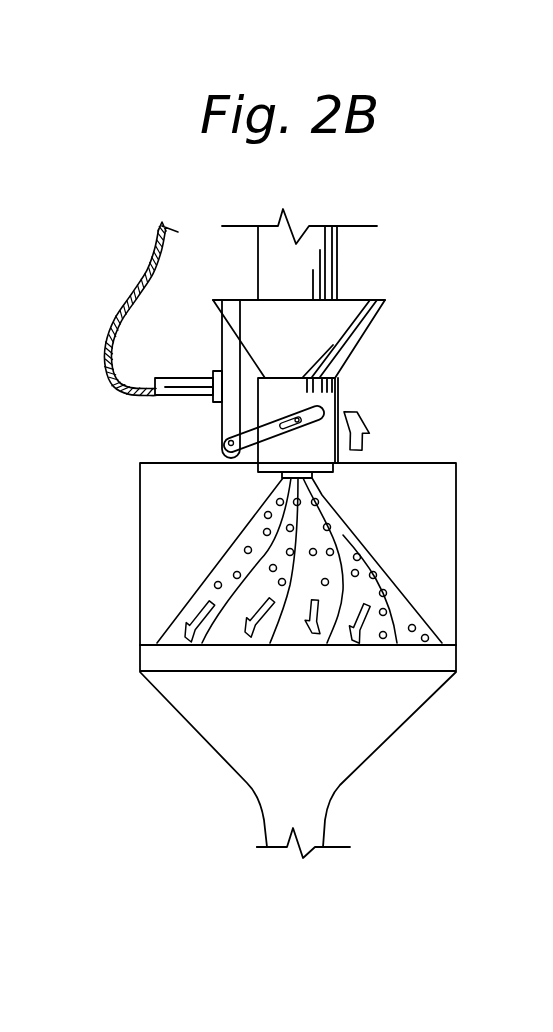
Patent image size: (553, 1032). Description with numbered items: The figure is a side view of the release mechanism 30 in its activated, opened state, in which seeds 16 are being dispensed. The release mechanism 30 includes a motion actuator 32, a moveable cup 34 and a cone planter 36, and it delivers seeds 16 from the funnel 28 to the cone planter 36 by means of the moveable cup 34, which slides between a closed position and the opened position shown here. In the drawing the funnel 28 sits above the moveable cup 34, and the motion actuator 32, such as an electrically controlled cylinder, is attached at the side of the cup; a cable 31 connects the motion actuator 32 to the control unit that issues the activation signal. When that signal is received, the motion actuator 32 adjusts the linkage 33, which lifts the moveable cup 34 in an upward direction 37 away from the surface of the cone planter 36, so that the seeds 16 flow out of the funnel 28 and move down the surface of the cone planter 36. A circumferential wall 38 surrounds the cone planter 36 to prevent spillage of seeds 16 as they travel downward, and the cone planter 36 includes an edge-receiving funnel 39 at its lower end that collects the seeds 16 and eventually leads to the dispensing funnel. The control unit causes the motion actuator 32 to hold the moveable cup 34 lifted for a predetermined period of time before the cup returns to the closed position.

The seeds 16 is at (215, 583).
The funnel 28 is at (357, 334).
The release mechanism 30 is at (127, 252).
The cable 31 is at (110, 332).
The motion actuator 32 is at (173, 397).
The linkage 33 is at (247, 458).
The moveable cup 34 is at (337, 385).
The cone planter 36 is at (360, 537).
The upward direction 37 is at (368, 432).
The circumferential wall 38 is at (140, 625).
The edge-receiving funnel 39 is at (192, 729).